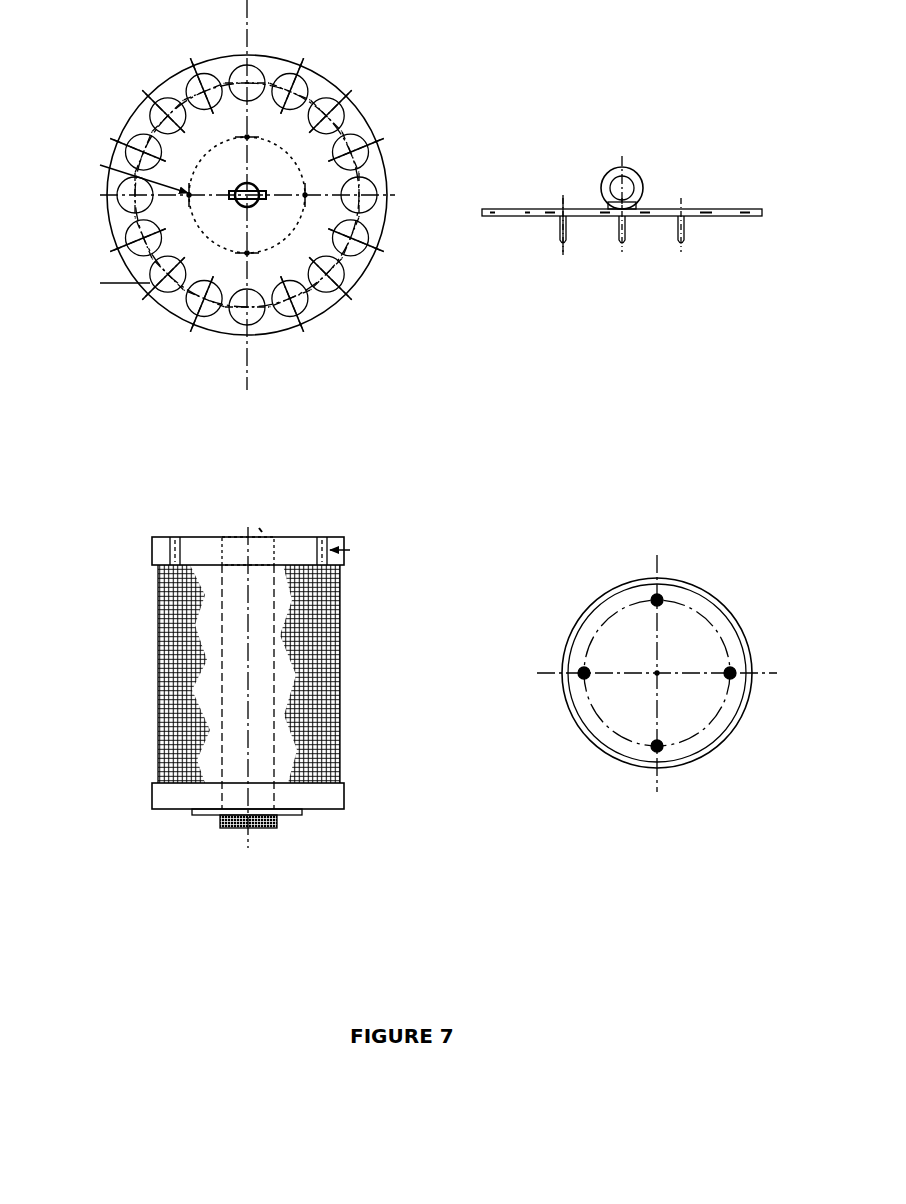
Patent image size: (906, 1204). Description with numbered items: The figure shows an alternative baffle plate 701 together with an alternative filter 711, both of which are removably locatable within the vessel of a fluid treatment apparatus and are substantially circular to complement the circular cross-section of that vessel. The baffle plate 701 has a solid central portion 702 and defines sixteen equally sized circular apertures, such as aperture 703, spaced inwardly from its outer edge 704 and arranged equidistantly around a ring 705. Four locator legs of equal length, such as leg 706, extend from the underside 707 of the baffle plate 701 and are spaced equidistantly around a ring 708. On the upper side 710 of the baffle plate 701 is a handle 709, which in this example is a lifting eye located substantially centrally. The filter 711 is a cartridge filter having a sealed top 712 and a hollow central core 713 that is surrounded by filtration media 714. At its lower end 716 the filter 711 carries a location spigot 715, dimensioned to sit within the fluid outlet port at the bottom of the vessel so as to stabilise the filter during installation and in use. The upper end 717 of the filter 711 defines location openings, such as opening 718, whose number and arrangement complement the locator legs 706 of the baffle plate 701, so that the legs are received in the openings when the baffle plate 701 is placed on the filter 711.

The baffle plate 701 is at (160, 325).
The solid central portion 702 is at (338, 134).
The aperture 703 is at (355, 252).
The outer edge 704 is at (383, 230).
The ring 705 is at (314, 294).
The locator leg 706 is at (637, 218).
The underside 707 is at (620, 238).
The ring 708 is at (282, 140).
The handle 709 is at (632, 170).
The upper side 710 is at (645, 203).
The filter 711 is at (190, 862).
The sealed top 712 is at (302, 544).
The hollow central core 713 is at (243, 610).
The filtration media 714 is at (340, 742).
The location spigot 715 is at (278, 826).
The lower end 716 is at (323, 816).
The upper end 717 is at (223, 534).
The location opening 718 is at (170, 550).